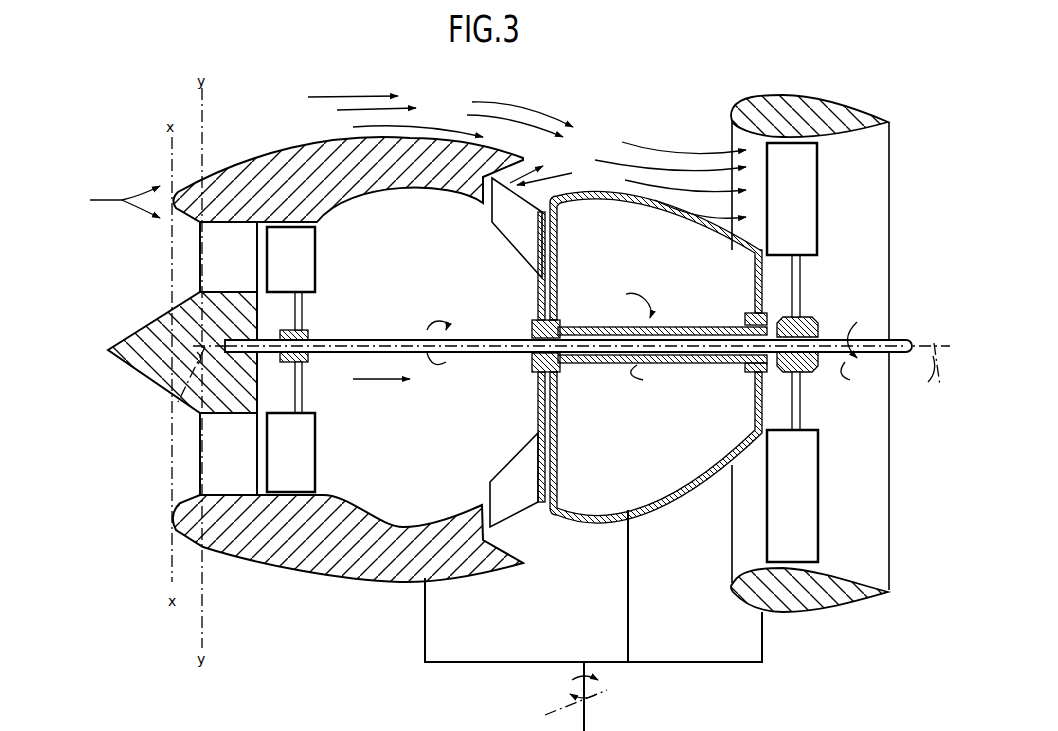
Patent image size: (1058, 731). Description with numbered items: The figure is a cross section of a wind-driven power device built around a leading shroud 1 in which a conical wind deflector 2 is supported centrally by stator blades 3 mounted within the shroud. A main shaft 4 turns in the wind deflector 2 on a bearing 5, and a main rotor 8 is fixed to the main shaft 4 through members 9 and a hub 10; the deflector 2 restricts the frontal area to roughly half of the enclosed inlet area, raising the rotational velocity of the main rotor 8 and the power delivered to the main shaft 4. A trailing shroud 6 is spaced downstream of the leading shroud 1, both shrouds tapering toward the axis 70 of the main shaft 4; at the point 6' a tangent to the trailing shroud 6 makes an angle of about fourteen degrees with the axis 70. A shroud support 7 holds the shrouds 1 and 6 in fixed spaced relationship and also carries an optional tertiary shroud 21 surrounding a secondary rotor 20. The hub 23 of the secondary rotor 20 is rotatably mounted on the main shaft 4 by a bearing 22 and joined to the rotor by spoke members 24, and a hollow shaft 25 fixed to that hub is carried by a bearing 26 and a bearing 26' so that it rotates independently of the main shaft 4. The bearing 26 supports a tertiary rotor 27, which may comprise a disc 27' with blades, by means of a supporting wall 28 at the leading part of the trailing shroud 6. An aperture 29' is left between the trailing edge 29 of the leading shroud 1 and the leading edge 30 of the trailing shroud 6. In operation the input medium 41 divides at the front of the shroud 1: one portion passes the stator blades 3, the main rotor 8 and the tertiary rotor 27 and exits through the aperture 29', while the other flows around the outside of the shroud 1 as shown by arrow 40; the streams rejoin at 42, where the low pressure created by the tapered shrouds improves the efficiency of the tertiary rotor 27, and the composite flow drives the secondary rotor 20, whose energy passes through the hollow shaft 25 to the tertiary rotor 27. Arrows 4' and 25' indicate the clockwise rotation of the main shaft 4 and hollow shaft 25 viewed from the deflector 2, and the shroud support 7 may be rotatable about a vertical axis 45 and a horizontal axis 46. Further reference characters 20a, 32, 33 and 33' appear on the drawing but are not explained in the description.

The leading shroud 1 is at (303, 143).
The conical wind deflector 2 is at (155, 372).
The stator blades 3 is at (212, 257).
The main shaft 4 is at (494, 348).
The rotation arrow of main shaft 4' is at (636, 350).
The bearing 5 is at (230, 343).
The trailing shroud 6 is at (656, 347).
The tangent point on trailing shroud 6' is at (733, 261).
The shroud support 7 is at (535, 658).
The main rotor 8 is at (300, 267).
The members 9 is at (303, 310).
The hub 10 is at (308, 332).
The secondary rotor 20 is at (807, 188).
The outer generator 20a is at (848, 578).
The tertiary shroud 21 is at (815, 602).
The bearing 22 is at (827, 320).
The hub of secondary rotor 23 is at (807, 313).
The spoke members 24 is at (800, 288).
The hollow shaft 25 is at (686, 327).
The rotation arrow of hollow shaft 25' is at (628, 329).
The bearing 26 is at (533, 328).
The bearing 26' is at (637, 379).
The tertiary rotor 27 is at (484, 228).
The disc of tertiary rotor 27' is at (514, 468).
The supporting wall 28 is at (557, 282).
The trailing edge of leading shroud 29 is at (527, 157).
The aperture 29' is at (591, 153).
The leading edge of trailing shroud 30 is at (557, 195).
The dome wall flange 32 is at (753, 292).
The chamber 33 is at (400, 263).
The chamber flow 33' is at (381, 392).
The outer flow arrow 40 is at (404, 107).
The input medium 41 is at (107, 199).
The low pressure joining region 42 is at (645, 148).
The vertical axis 45 is at (588, 716).
The horizontal axis 46 is at (605, 688).
The axis of main shaft 70 is at (178, 405).